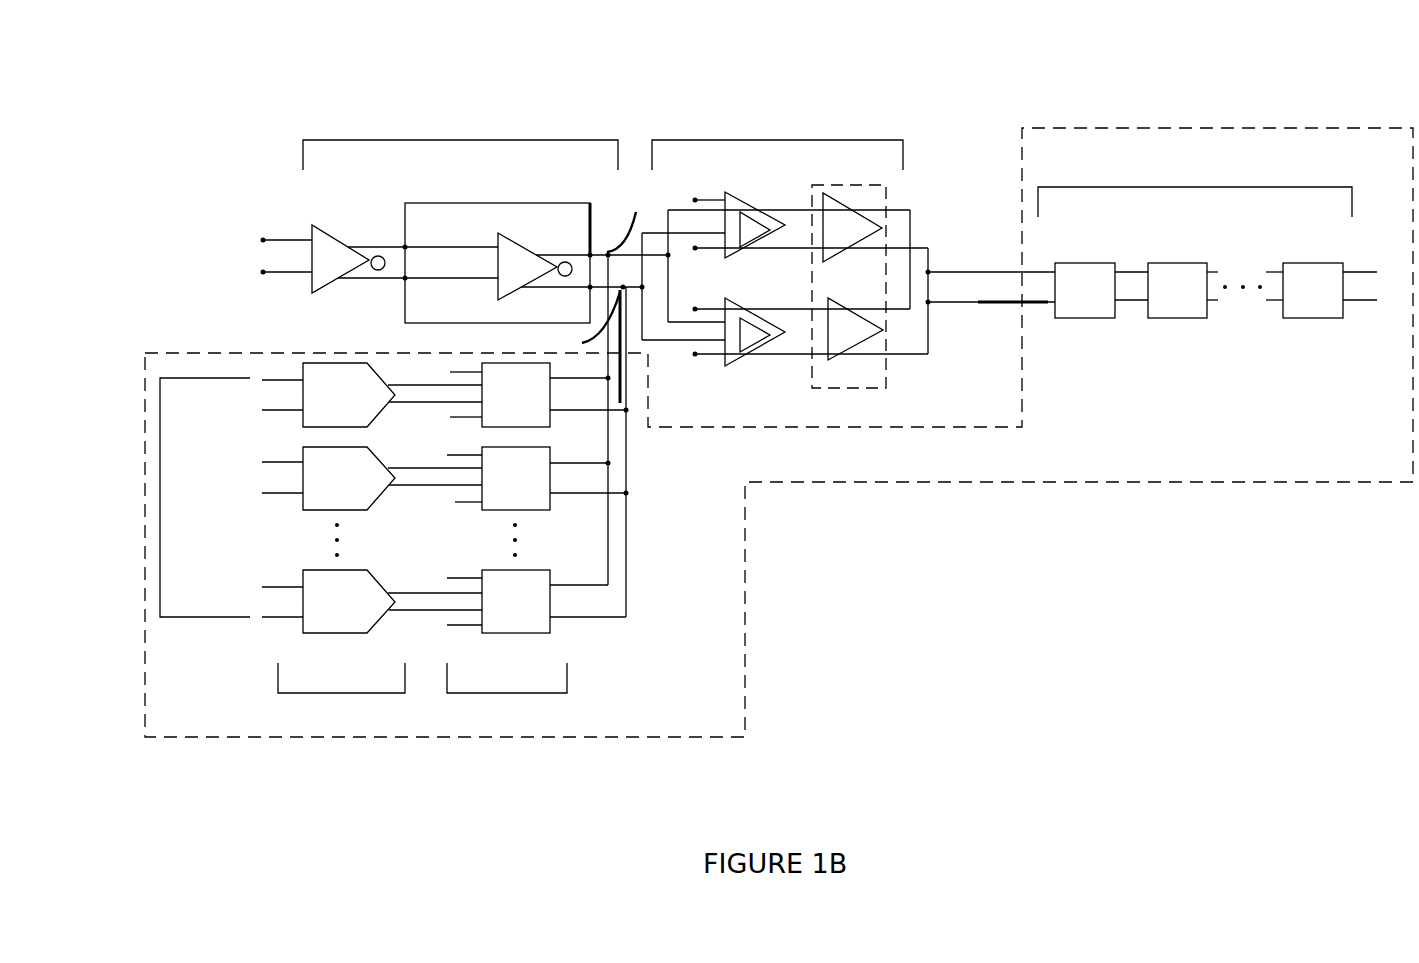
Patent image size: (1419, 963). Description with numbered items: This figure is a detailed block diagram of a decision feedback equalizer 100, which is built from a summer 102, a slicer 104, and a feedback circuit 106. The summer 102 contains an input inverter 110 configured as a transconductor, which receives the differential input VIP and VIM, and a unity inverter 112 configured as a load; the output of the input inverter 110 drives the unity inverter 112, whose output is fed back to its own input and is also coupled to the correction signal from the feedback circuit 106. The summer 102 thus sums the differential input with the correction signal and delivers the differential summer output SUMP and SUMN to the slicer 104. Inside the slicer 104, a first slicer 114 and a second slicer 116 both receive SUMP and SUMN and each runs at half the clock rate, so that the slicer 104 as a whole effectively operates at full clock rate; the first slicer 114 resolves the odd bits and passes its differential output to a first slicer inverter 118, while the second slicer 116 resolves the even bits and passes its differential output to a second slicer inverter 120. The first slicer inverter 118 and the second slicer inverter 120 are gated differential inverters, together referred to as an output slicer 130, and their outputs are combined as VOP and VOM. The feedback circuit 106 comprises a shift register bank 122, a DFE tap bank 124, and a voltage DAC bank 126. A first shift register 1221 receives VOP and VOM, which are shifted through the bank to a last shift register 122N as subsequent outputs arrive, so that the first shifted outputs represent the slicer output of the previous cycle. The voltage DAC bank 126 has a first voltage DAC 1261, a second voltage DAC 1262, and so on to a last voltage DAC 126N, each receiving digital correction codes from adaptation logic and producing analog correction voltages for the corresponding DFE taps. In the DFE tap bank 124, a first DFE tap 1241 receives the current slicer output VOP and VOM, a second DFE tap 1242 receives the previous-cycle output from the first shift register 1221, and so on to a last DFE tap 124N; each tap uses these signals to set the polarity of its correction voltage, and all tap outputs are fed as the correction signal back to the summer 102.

The decision feedback equalizer 100 is at (801, 88).
The summer 102 is at (592, 143).
The slicer 104 is at (882, 140).
The feedback circuit 106 is at (930, 485).
The input inverter 110 is at (322, 240).
The unity inverter 112 is at (512, 240).
The first slicer 114 is at (730, 198).
The second slicer 116 is at (757, 338).
The first slicer inverter 118 is at (838, 200).
The second slicer inverter 120 is at (847, 350).
The shift register bank 122 is at (1320, 187).
The first shift register 1221 is at (1088, 305).
The last shift register 122N is at (1330, 305).
The DFE tap bank 124 is at (457, 694).
The first DFE tap 1241 is at (538, 395).
The second DFE tap 1242 is at (535, 492).
The last DFE tap 124N is at (540, 615).
The voltage DAC bank 126 is at (278, 690).
The first voltage DAC 1261 is at (320, 417).
The second voltage DAC 1262 is at (323, 502).
The last voltage DAC 126N is at (313, 620).
The output slicer 130 is at (885, 195).